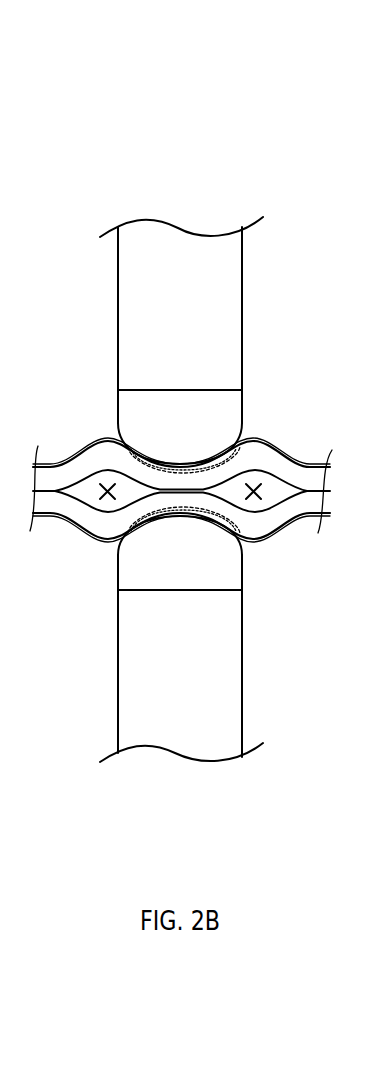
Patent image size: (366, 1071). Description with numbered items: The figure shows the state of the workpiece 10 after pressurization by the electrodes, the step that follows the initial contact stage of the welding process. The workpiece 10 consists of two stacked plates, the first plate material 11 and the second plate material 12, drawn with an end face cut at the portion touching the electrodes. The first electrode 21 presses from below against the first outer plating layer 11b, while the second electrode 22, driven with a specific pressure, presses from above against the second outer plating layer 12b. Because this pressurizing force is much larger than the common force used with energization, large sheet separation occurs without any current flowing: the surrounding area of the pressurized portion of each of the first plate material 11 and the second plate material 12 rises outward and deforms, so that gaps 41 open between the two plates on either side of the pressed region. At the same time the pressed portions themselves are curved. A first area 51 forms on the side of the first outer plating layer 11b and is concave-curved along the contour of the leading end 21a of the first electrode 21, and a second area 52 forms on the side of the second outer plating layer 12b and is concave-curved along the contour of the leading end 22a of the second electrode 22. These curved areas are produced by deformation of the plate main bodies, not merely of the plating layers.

The workpiece 10 is at (171, 492).
The first plate material 11 is at (171, 579).
The first outer plating layer 11b is at (42, 515).
The second plate material 12 is at (184, 424).
The second outer plating layer 12b is at (280, 457).
The gaps 41 is at (105, 494).
The first electrode 21 is at (195, 681).
The leading end of the first electrode 21a is at (177, 517).
The second electrode 22 is at (165, 291).
The leading end of the second electrode 22a is at (180, 462).
The first area 51 is at (241, 540).
The second area 52 is at (239, 446).